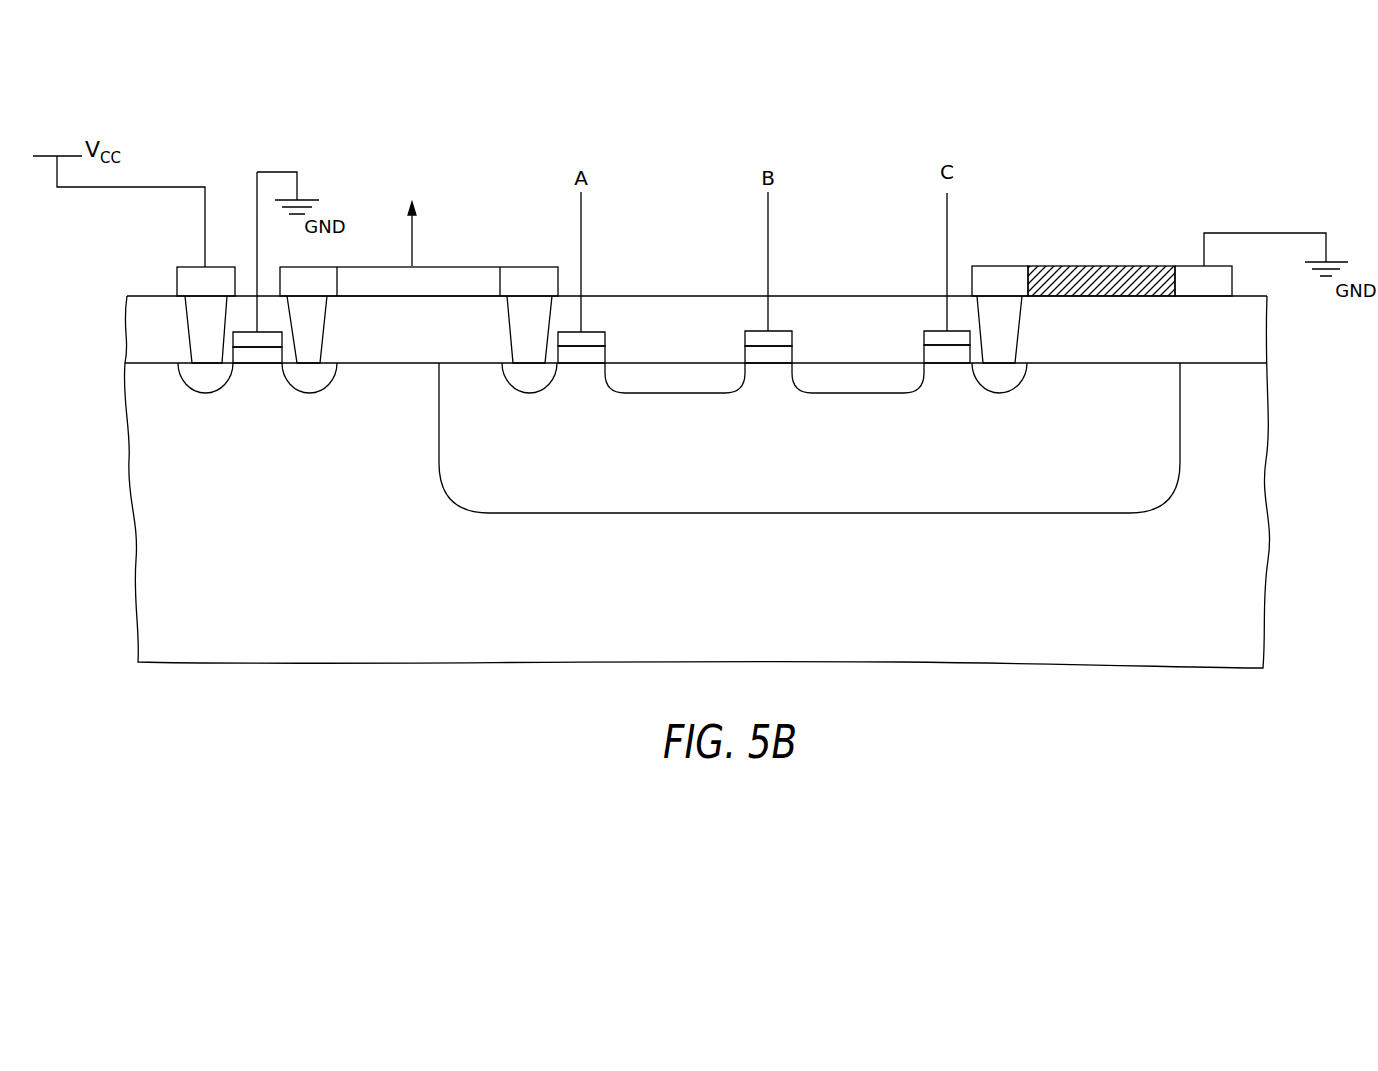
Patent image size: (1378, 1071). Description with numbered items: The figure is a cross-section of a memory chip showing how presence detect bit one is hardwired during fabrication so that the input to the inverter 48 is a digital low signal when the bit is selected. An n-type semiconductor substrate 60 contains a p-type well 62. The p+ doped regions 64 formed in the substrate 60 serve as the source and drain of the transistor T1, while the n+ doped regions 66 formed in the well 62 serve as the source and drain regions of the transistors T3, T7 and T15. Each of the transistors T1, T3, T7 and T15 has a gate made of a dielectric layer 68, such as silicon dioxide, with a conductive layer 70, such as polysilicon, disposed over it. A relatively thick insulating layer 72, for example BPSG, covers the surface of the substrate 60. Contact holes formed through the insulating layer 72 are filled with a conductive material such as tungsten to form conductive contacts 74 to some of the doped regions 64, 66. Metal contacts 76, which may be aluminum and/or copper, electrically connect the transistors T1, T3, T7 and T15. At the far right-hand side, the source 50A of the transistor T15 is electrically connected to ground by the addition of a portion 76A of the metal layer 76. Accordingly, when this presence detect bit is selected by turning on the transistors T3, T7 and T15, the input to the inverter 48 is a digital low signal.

The semiconductor substrate 60 is at (1247, 597).
The p-type well 62 is at (1153, 448).
The p+ doped regions 64 is at (198, 382).
The n+ doped regions 66 is at (522, 380).
The dielectric layer 68 is at (247, 355).
The conductive layer 70 is at (247, 338).
The insulating layer 72 is at (1253, 327).
The conductive contacts 74 is at (200, 313).
The metal contacts 76 is at (192, 283).
The portion of the metal layer 76A is at (1103, 254).
The inverter 48 is at (413, 187).
The source of transistor T15 50A is at (1057, 387).
The transistor T1 is at (263, 408).
The transistor T3 is at (586, 406).
The transistor T7 is at (771, 406).
The transistor T15 is at (950, 406).